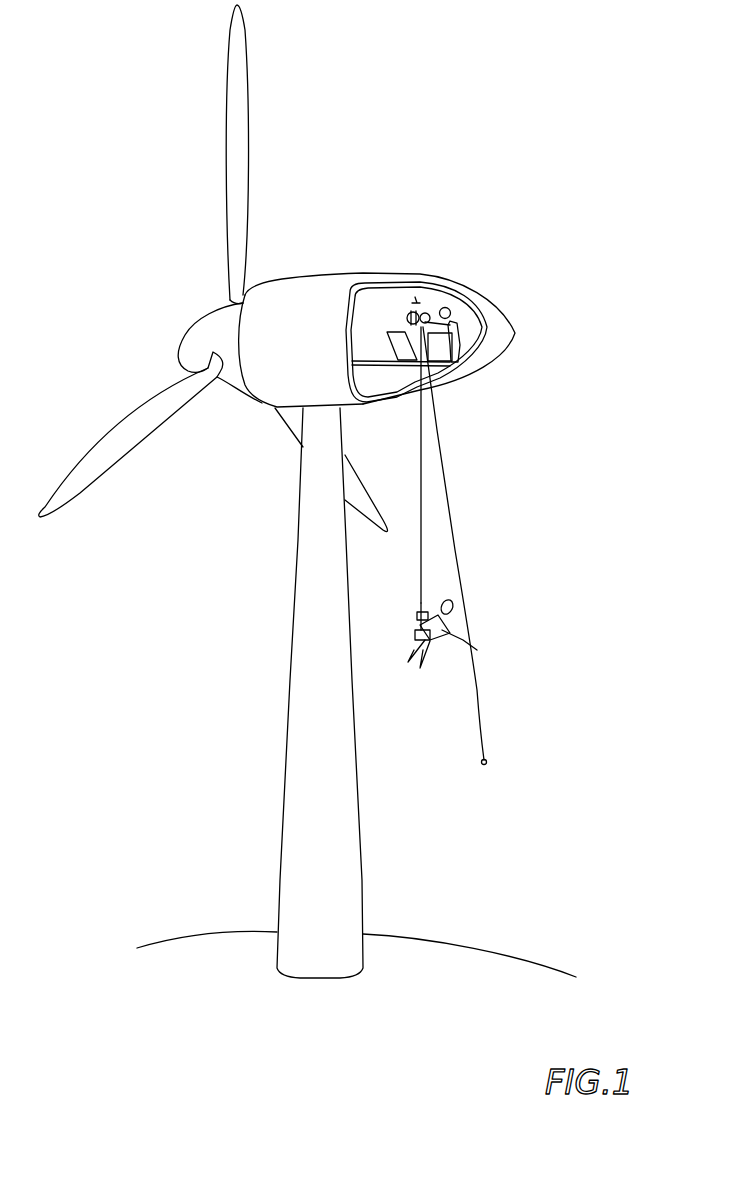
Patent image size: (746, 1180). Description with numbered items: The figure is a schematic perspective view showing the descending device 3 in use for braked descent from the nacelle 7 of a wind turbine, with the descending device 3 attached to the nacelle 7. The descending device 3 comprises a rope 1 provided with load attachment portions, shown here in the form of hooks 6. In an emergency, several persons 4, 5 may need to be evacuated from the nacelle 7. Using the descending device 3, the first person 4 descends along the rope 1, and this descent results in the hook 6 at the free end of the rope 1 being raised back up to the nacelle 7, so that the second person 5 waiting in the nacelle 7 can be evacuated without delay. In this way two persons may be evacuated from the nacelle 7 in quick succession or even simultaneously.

The rope 1 is at (427, 519).
The descending device 3 is at (410, 313).
The first person 4 is at (475, 652).
The second person 5 is at (453, 328).
The hook 6 is at (420, 614).
The nacelle 7 is at (277, 347).